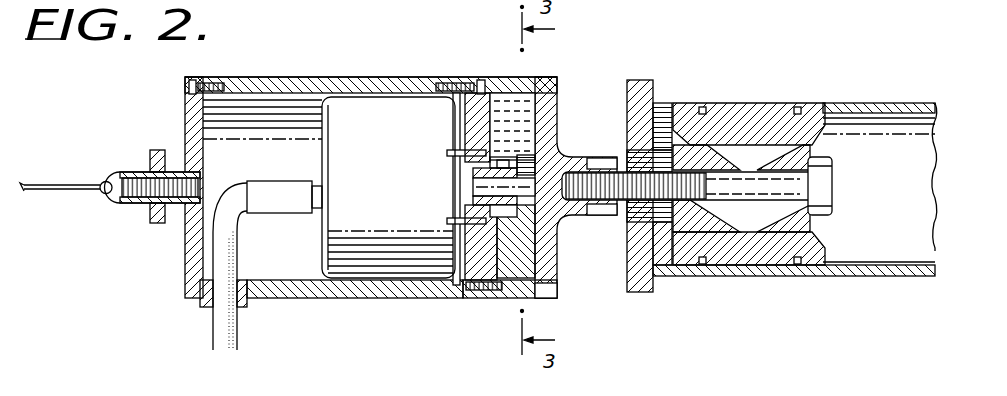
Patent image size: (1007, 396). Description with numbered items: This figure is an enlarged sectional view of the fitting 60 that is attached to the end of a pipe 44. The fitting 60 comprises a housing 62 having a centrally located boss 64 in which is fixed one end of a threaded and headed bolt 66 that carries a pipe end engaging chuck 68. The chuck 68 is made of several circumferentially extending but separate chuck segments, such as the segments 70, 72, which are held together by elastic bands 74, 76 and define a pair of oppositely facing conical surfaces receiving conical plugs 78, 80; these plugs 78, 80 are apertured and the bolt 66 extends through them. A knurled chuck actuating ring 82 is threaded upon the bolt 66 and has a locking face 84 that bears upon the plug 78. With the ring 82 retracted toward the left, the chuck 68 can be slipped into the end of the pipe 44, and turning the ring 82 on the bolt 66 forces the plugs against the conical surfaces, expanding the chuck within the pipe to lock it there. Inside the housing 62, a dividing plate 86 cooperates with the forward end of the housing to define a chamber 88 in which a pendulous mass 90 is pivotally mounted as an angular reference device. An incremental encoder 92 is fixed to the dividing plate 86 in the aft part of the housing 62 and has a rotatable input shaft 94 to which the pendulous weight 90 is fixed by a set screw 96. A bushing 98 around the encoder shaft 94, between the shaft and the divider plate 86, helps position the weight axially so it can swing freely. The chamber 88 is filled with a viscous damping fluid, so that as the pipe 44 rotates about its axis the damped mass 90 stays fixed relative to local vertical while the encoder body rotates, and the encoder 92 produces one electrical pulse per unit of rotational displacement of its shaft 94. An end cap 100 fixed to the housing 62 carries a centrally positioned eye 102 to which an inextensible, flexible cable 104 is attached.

The pipe 44 is at (912, 103).
The fitting 60 is at (343, 47).
The housing 62 is at (392, 78).
The boss 64 is at (580, 216).
The bolt 66 is at (800, 186).
The chuck 68 is at (840, 157).
The chuck segment 70 is at (753, 118).
The chuck segment 72 is at (763, 262).
The elastic band 74 is at (703, 267).
The elastic band 76 is at (798, 266).
The conical plug 78 is at (713, 216).
The conical plug 80 is at (818, 222).
The knurled chuck actuating ring 82 is at (636, 80).
The locking face 84 is at (684, 165).
The dividing plate 86 is at (488, 107).
The chamber 88 is at (527, 103).
The pendulous mass 90 is at (528, 268).
The incremental encoder 92 is at (338, 238).
The input shaft 94 is at (475, 185).
The set screw 96 is at (521, 160).
The bushing 98 is at (477, 173).
The end cap 100 is at (187, 265).
The eye 102 is at (131, 172).
The cable 104 is at (64, 183).